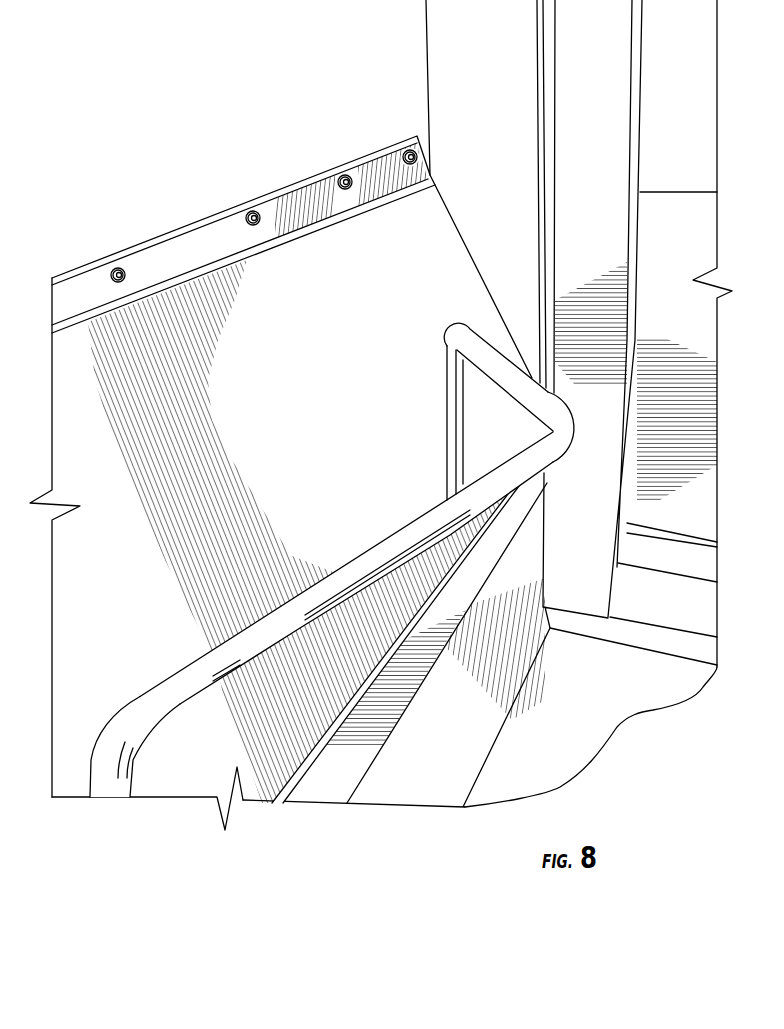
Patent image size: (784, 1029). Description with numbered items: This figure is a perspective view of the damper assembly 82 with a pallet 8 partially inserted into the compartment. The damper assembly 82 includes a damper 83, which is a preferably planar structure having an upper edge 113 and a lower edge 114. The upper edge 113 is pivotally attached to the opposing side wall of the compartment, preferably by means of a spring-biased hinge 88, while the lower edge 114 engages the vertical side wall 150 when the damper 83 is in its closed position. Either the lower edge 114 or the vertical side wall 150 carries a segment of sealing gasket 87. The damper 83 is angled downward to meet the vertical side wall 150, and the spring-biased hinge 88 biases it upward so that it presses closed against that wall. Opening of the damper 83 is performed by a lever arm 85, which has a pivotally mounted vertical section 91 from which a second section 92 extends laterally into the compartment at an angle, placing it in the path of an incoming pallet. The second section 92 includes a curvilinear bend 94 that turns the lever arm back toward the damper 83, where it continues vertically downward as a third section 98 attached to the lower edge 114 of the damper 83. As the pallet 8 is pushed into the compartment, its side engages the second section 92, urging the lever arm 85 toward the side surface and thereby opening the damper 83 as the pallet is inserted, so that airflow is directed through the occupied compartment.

The pallet 8 is at (673, 95).
The damper assembly 82 is at (482, 204).
The damper 83 is at (405, 278).
The lever arm 85 is at (344, 560).
The sealing gasket 87 is at (417, 688).
The spring-biased hinge 88 is at (349, 216).
The vertical section 91 is at (158, 736).
The second section 92 is at (238, 660).
The curvilinear bend 94 is at (563, 441).
The third section 98 is at (449, 413).
The upper edge 113 is at (283, 233).
The lower edge 114 is at (303, 790).
The vertical side wall 150 is at (400, 789).